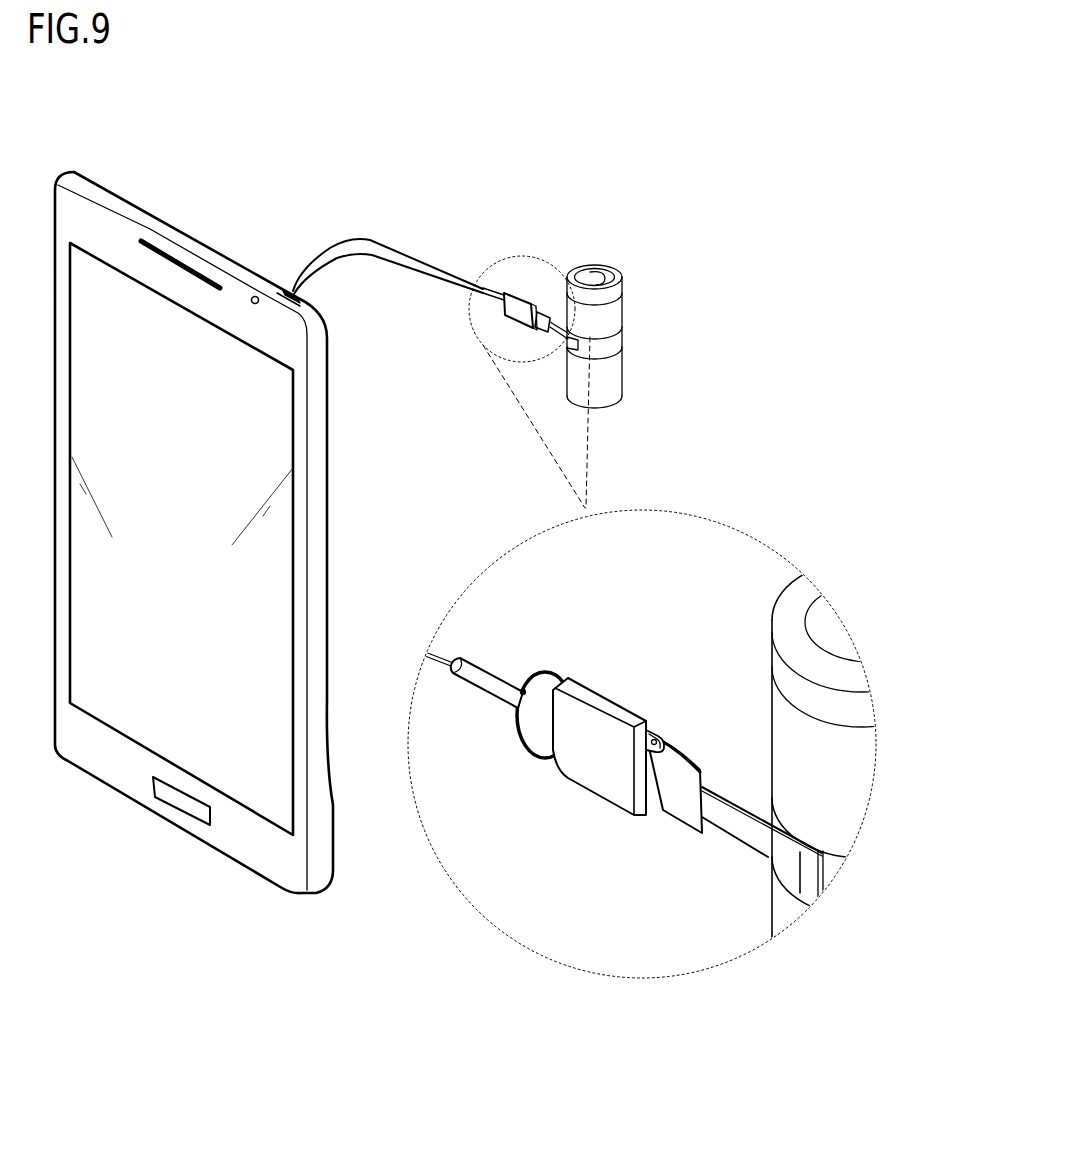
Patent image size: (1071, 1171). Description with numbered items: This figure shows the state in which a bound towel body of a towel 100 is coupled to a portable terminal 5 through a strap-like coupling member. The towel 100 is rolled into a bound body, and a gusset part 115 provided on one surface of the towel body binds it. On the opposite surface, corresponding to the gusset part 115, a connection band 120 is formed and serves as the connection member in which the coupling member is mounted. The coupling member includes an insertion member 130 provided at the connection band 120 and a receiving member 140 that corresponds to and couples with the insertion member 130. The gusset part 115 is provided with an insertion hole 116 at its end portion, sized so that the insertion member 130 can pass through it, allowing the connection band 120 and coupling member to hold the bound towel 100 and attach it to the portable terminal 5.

The mobile terminal 5 is at (268, 650).
The towel 100 is at (513, 298).
The gusset part 115 is at (600, 355).
The insertion hole 116 is at (790, 860).
The connection band 120 is at (740, 823).
The insertion member 130 is at (640, 777).
The receiving member 140 is at (598, 720).